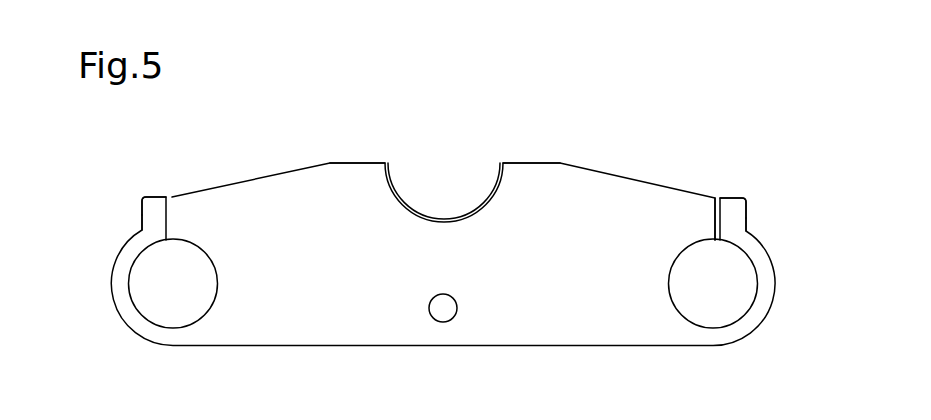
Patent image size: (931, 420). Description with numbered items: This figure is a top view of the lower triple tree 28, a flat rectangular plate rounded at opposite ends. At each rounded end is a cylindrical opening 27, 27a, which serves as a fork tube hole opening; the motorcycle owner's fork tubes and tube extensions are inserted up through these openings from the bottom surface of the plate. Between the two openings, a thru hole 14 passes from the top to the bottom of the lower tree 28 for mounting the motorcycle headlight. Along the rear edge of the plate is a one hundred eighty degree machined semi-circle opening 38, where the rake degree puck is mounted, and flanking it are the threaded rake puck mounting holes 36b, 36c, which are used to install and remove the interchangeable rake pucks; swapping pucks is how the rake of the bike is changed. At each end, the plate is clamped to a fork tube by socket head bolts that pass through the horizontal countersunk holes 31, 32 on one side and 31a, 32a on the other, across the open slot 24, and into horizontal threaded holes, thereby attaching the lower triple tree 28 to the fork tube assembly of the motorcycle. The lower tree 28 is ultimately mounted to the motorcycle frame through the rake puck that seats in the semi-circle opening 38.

The thru hole 14 is at (443, 308).
The open slot 24 is at (715, 198).
The cylindrical opening 27 is at (172, 283).
The cylindrical opening 27a is at (715, 285).
The lower triple tree 28 is at (267, 258).
The horizontal countersunk hole 31 is at (142, 222).
The horizontal countersunk hole 31a is at (747, 229).
The horizontal countersunk hole 32 is at (142, 205).
The horizontal countersunk hole 32a is at (747, 208).
The rake puck mounting hole 36b is at (358, 163).
The rake puck mounting hole 36c is at (529, 163).
The machined semi-circle opening 38 is at (443, 218).